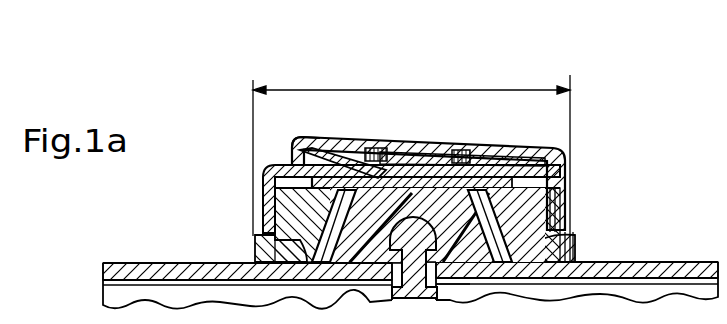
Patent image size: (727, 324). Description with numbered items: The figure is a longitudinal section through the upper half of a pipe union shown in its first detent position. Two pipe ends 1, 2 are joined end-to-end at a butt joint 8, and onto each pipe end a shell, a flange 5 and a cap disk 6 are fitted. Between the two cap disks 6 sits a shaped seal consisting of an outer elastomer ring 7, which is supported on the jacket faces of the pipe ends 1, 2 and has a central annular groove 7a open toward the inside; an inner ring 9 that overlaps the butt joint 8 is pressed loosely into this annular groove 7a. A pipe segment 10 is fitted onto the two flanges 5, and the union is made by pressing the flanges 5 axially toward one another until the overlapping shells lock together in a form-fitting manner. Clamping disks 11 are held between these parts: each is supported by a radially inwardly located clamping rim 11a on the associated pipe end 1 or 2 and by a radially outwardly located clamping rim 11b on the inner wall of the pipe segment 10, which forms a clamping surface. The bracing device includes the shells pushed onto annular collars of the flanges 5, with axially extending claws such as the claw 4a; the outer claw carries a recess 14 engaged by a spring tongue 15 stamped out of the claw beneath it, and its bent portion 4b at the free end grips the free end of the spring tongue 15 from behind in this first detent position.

The pipe end 1 is at (142, 268).
The pipe end 2 is at (653, 265).
The claw 4a is at (492, 150).
The bent portion 4b is at (294, 142).
The flange 5 is at (275, 198).
The cap disk 6 is at (278, 248).
The outer elastomer ring 7 is at (556, 210).
The annular groove 7a is at (394, 262).
The butt joint 8 is at (455, 299).
The inner ring 9 is at (418, 298).
The pipe segment 10 is at (545, 153).
The clamping disk 11 is at (266, 170).
The radially inwardly located clamping rim 11a is at (296, 222).
The radially outwardly located clamping rim 11b is at (380, 148).
The recess 14 is at (398, 152).
The spring tongue 15 is at (335, 162).